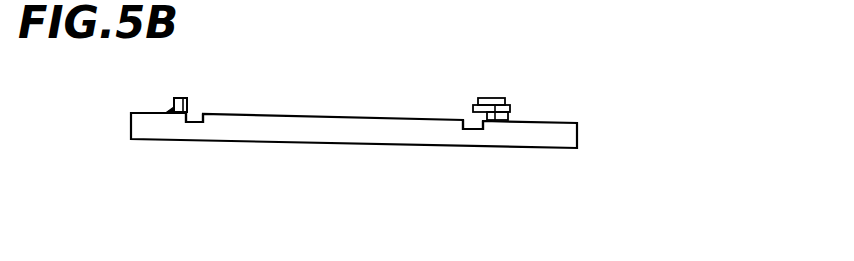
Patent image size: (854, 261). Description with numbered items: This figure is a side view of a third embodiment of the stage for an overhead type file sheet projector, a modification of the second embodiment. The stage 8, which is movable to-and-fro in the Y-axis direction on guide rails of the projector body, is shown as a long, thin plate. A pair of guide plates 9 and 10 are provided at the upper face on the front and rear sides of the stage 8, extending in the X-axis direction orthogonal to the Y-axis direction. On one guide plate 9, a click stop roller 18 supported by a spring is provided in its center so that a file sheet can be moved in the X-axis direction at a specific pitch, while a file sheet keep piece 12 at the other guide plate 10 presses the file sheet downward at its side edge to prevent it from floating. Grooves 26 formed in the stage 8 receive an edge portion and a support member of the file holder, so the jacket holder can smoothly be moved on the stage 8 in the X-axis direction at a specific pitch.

The stage 8 is at (133, 131).
The guide plate 9 is at (176, 98).
The guide plate 10 is at (487, 123).
The file sheet keep piece 12 is at (514, 105).
The click stop roller 18 is at (188, 98).
The groove 26 is at (200, 119).